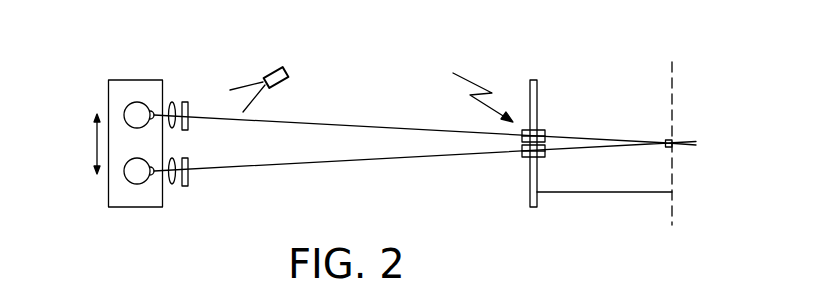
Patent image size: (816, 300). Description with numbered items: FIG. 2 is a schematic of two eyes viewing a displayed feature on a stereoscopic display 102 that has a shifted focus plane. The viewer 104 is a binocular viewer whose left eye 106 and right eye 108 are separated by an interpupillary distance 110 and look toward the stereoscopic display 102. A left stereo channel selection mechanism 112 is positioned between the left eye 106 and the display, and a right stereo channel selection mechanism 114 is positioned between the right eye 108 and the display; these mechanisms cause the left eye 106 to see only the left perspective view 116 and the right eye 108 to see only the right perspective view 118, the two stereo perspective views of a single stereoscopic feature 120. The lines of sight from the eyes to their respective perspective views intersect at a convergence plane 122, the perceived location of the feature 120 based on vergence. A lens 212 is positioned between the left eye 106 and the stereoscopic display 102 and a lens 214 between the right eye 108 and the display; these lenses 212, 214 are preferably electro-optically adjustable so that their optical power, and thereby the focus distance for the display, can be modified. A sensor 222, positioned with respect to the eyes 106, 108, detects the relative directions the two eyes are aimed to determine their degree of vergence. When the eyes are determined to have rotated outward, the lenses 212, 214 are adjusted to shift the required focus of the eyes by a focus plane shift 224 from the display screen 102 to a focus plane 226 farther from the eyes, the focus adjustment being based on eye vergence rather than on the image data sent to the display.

The stereoscopic display 102 is at (530, 82).
The viewer 104 is at (135, 80).
The left eye 106 is at (131, 111).
The right eye 108 is at (131, 176).
The interpupillary distance 110 is at (96, 145).
The left stereo channel selection mechanism 112 is at (189, 110).
The right stereo channel selection mechanism 114 is at (189, 180).
The left perspective view 116 is at (545, 133).
The right perspective view 118 is at (545, 150).
The stereoscopic object or feature 120 is at (461, 88).
The convergence plane 122 is at (671, 102).
The lens 212 is at (171, 102).
The lens 214 is at (171, 184).
The sensor 222 is at (277, 68).
The focus plane shift 224 is at (607, 192).
The focus plane 226 is at (673, 205).